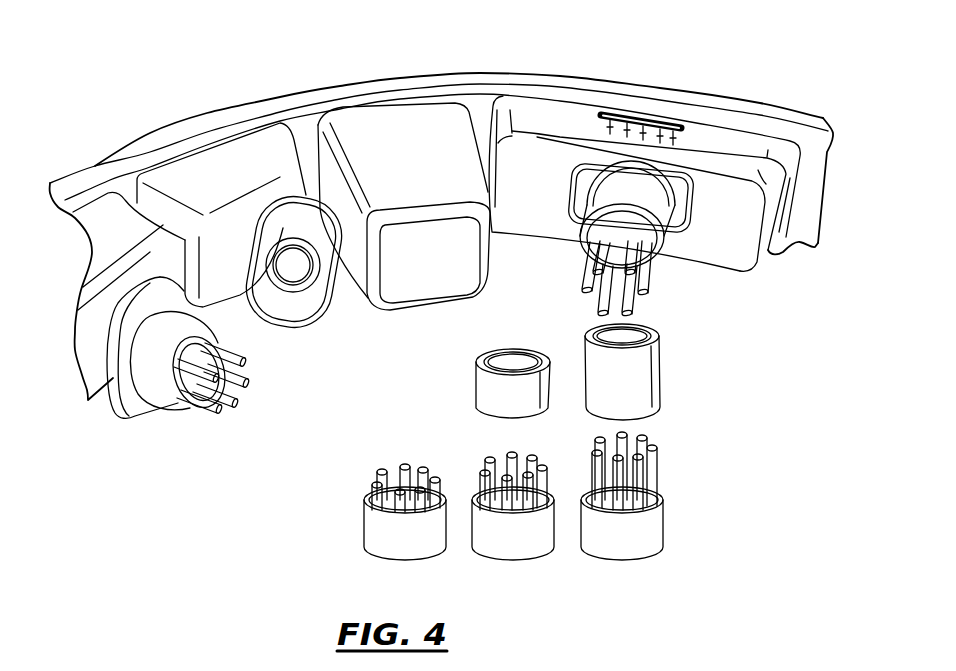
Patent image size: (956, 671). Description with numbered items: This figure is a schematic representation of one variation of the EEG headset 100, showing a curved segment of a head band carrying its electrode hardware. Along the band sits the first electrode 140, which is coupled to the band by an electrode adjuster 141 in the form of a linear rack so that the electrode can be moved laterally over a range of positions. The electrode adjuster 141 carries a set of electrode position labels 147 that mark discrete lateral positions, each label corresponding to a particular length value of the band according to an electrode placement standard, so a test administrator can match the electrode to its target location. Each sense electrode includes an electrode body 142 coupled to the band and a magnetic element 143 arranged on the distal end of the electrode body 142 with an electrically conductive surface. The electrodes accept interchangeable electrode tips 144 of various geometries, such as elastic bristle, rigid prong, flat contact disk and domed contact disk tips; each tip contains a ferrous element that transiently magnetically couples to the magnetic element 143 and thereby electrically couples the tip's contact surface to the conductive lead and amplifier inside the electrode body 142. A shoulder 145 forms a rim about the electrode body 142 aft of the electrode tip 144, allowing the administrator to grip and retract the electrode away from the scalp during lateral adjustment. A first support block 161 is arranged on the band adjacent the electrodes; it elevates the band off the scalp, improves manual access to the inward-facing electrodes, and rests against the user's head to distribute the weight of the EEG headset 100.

The EEG headset 100 is at (462, 201).
The first electrode 140 is at (198, 170).
The electrode adjuster 141 is at (660, 133).
The electrode body 142 is at (222, 250).
The magnetic element 143 is at (298, 278).
The electrode tips 144 is at (522, 397).
The shoulder 145 is at (287, 222).
The electrode position labels 147 is at (683, 138).
The first support block 161 is at (387, 127).